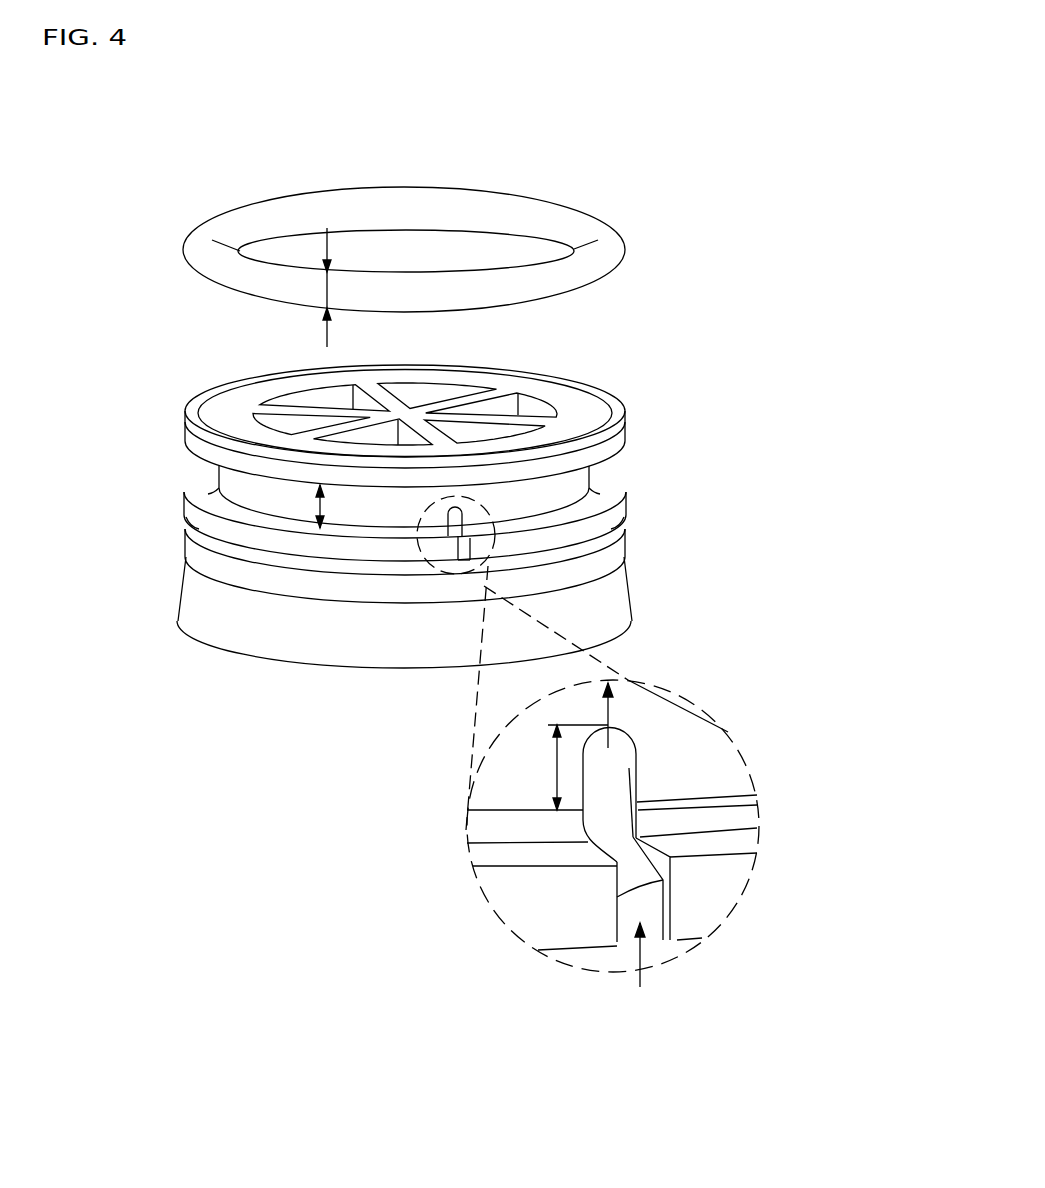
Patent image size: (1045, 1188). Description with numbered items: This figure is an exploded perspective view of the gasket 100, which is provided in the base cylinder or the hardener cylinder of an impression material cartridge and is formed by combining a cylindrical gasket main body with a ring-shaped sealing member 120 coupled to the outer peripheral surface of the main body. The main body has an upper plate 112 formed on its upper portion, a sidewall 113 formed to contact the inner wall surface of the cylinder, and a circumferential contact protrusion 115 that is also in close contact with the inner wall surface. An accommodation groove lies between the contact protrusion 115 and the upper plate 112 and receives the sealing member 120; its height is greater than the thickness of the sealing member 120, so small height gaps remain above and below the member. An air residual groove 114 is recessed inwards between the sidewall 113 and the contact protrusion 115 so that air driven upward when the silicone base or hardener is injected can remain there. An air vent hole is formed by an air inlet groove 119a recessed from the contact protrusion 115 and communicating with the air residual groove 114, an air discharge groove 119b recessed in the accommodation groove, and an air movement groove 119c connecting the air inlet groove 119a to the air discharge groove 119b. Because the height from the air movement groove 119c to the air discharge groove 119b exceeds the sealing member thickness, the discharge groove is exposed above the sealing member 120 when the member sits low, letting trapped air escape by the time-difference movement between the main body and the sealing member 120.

The gasket 100 is at (112, 146).
The sealing member 120 is at (600, 252).
The upper plate 112 is at (578, 394).
The contact protrusion 115 is at (606, 493).
The air residual groove 114 is at (603, 540).
The sidewall 113 is at (605, 594).
The air inlet groove 119a is at (473, 568).
The air discharge groove 119b is at (440, 515).
The air movement groove 119c is at (622, 827).